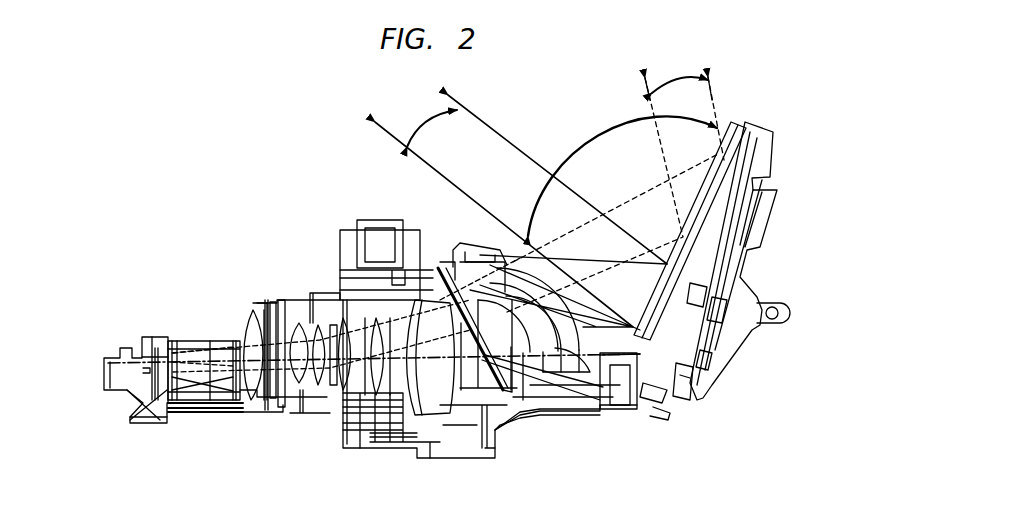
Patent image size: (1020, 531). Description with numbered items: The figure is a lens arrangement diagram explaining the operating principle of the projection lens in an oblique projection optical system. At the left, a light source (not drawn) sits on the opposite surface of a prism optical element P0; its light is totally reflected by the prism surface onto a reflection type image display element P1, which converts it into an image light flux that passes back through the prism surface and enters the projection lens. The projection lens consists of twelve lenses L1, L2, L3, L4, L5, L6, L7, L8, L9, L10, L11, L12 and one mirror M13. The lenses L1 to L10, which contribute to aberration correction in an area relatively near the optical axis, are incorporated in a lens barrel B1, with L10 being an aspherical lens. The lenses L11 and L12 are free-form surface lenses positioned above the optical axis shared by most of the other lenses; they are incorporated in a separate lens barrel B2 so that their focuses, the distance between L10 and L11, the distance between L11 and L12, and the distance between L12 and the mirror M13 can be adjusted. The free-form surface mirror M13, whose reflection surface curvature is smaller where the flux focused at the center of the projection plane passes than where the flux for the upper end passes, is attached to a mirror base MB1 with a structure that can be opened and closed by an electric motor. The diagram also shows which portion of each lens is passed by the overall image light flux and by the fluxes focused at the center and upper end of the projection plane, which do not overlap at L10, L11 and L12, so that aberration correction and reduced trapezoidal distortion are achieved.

The prism optical element P0 is at (131, 421).
The image display element P1 is at (190, 340).
The lens L1 is at (245, 405).
The lens L2 is at (282, 303).
The lens L3 is at (284, 410).
The lens L4 is at (310, 320).
The lens L5 is at (316, 410).
The lens L6 is at (340, 305).
The lens L7 is at (368, 420).
The lens L8 is at (386, 260).
The lens L9 is at (402, 320).
The aspherical lens L10 is at (436, 266).
The free-form surface lens L11 is at (525, 355).
The free-form surface lens L12 is at (577, 322).
The lens barrel B1 is at (577, 410).
The lens barrel B2 is at (592, 416).
The free-form surface mirror M13 is at (745, 135).
The mirror base MB1 is at (757, 197).